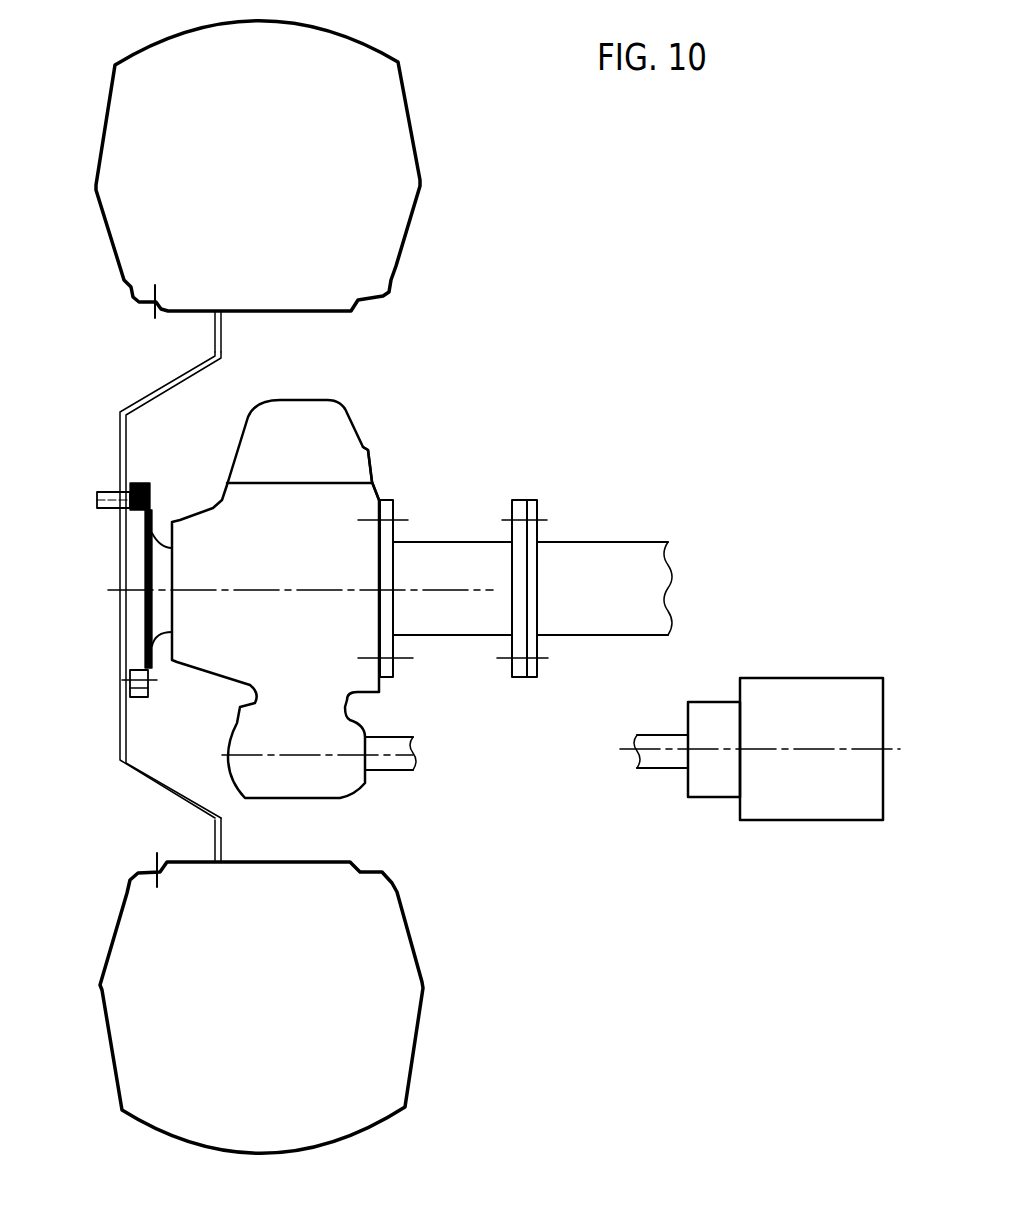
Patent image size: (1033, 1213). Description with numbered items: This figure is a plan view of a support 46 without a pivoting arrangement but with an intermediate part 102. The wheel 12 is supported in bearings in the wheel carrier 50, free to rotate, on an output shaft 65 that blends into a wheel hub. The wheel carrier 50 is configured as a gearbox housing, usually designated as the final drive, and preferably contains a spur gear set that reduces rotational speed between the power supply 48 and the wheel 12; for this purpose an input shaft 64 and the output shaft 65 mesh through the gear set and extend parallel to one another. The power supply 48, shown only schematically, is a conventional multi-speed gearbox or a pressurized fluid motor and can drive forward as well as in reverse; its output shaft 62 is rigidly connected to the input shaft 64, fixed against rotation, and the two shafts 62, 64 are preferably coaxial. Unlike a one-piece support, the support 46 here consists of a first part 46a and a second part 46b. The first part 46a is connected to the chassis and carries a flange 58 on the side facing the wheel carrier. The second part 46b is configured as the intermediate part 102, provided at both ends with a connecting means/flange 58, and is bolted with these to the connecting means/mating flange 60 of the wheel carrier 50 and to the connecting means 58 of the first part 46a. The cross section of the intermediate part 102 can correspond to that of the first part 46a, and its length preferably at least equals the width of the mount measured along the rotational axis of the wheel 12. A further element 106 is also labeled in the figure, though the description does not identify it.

The wheel 12 is at (274, 125).
The support 46 is at (604, 497).
The first part 46a is at (614, 624).
The second part 46b is at (480, 624).
The power supply 48 is at (777, 810).
The wheel carrier 50 is at (257, 443).
The connecting means/flange 58 is at (400, 505).
The connecting means/mating flange 60 is at (381, 470).
The output shaft 62 is at (662, 760).
The input shaft 64 is at (393, 768).
The output shaft 65 is at (123, 645).
The intermediate part 102 is at (452, 540).
The coupling flange 106 is at (540, 510).